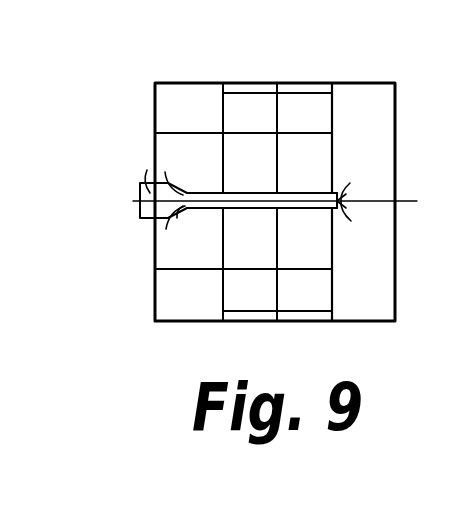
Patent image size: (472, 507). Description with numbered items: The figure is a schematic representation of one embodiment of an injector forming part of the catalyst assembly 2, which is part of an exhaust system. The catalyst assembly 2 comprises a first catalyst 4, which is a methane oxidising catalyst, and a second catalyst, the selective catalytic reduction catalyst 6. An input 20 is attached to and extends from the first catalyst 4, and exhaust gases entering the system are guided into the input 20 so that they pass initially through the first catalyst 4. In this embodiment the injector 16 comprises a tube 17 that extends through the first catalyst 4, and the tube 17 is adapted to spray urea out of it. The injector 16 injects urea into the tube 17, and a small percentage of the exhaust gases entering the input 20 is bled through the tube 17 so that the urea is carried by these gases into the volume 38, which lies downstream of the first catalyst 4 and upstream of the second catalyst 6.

The catalyst assembly 2 is at (270, 102).
The first catalyst 4 is at (259, 170).
The selective catalytic reduction (SCR) catalyst 6 is at (259, 130).
The injector 16 is at (166, 201).
The tube 17 is at (303, 208).
The input 20 is at (170, 170).
The volume 38 is at (342, 160).